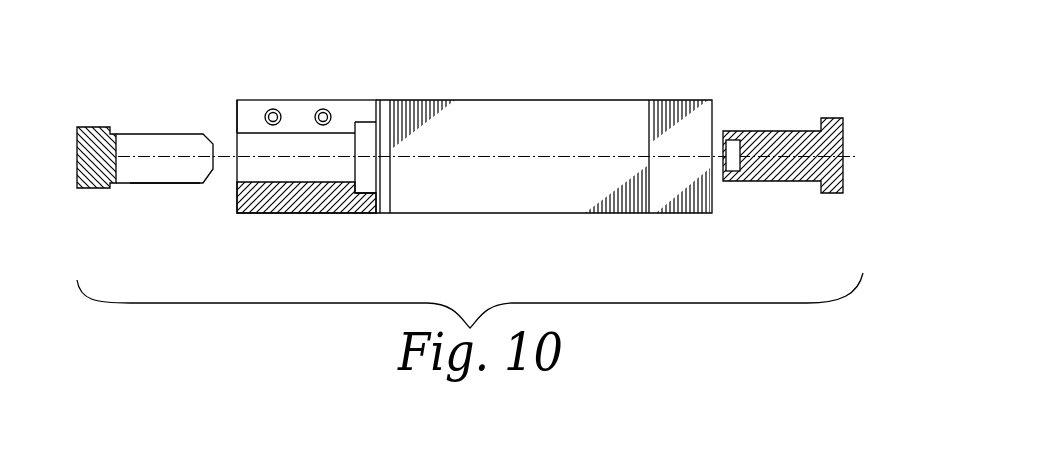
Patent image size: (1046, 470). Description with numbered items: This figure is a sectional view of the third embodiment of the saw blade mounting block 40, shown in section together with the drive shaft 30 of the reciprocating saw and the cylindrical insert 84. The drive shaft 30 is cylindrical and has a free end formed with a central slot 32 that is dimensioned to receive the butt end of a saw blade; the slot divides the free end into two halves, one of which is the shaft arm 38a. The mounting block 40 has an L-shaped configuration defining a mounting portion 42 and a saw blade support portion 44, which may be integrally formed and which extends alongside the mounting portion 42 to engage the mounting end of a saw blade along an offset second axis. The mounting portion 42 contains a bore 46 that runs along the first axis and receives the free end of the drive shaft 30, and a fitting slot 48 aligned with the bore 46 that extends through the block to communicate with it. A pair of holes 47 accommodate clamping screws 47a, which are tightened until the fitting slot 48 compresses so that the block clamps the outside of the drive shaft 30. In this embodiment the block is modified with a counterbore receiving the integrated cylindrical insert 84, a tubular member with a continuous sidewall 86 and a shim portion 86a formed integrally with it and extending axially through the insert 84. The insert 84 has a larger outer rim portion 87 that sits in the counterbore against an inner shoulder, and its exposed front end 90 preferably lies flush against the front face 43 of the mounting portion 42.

The drive shaft 30 is at (100, 202).
The central slot 32 is at (157, 148).
The shaft arm 38a is at (180, 172).
The mounting block 40 is at (397, 88).
The mounting portion 42 is at (292, 99).
The front face 43 is at (377, 197).
The saw blade support portion 44 is at (508, 100).
The bore 46 is at (243, 168).
The holes 47 is at (324, 108).
The clamping screws 47a is at (273, 108).
The fitting slot 48 is at (250, 112).
The cylindrical insert 84 is at (800, 196).
The continuous sidewall 86 is at (730, 131).
The shim portion 86a is at (788, 140).
The rim portion 87 is at (830, 118).
The front end 90 is at (844, 185).